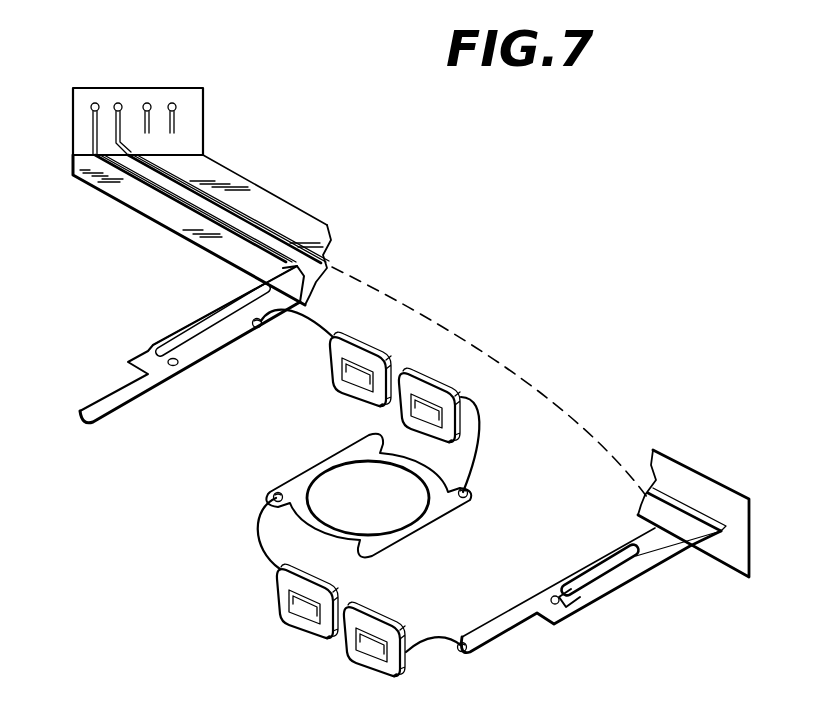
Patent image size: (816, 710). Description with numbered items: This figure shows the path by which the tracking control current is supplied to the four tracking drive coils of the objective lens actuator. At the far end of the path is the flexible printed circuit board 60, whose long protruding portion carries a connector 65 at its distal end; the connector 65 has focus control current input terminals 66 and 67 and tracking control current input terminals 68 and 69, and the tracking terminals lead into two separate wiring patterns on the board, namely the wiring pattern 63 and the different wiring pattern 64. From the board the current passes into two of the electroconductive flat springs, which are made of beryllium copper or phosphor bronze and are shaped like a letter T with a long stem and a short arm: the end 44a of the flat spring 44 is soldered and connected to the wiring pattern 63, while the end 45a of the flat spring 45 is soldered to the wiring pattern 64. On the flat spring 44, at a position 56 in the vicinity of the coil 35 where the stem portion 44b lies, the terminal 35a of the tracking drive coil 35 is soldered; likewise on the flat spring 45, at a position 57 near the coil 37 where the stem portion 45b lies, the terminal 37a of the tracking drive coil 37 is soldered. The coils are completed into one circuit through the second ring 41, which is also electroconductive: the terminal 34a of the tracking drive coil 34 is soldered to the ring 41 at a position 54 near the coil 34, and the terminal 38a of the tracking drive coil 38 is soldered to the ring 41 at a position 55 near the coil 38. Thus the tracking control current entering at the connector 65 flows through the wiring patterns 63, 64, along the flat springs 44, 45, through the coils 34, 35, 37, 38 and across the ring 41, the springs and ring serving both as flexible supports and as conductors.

The tracking drive coil 34 is at (300, 623).
The terminal of the coil 34 34a is at (260, 557).
The tracking drive coil 35 is at (370, 663).
The terminal of the coil 35 35a is at (427, 637).
The tracking drive coil 37 is at (350, 395).
The terminal of the coil 37 37a is at (312, 312).
The tracking drive coil 38 is at (427, 377).
The terminal of the coil 38 38a is at (483, 433).
The second ring 41 is at (430, 527).
The flat spring 44 is at (591, 610).
The end of the flat spring 44a is at (620, 595).
The long stem portion 44b is at (533, 625).
The flat spring 45 is at (186, 337).
The end of the flat spring 45a is at (222, 305).
The long stem portion 45b is at (205, 357).
The soldering position 54 is at (273, 495).
The soldering position 55 is at (473, 495).
The soldering position 56 is at (463, 653).
The soldering position 57 is at (262, 328).
The flexible printed circuit board 60 is at (267, 192).
The wiring pattern 63 is at (287, 240).
The wiring pattern 64 is at (170, 210).
The connector 65 is at (203, 120).
The focus control current input terminal 66 is at (147, 103).
The focus control current input terminal 67 is at (173, 103).
The tracking control current input terminal 68 is at (117, 103).
The tracking control current input terminal 69 is at (93, 104).